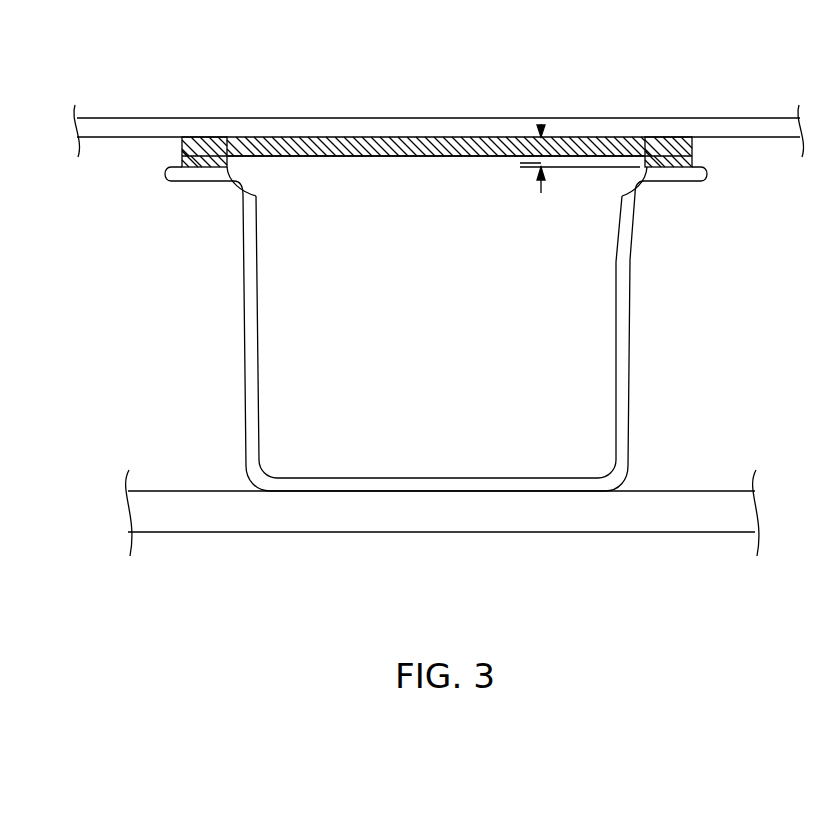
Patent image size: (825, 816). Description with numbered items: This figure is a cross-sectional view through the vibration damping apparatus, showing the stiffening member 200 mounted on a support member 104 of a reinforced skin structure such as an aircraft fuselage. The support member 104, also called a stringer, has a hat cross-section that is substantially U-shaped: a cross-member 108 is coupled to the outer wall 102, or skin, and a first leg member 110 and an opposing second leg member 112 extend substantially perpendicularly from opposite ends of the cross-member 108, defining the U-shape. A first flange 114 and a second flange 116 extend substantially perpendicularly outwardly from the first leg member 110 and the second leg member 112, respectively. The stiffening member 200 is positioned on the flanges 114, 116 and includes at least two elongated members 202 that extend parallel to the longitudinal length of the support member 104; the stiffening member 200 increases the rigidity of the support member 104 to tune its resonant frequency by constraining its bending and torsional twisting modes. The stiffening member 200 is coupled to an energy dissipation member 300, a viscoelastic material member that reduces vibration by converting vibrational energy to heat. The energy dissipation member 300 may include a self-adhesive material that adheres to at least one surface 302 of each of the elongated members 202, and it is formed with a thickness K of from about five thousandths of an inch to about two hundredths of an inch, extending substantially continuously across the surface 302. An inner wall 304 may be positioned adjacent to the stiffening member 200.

The stiffening member 200 is at (150, 97).
The elongated members 202 is at (212, 141).
The surface 302 is at (231, 165).
The inner wall 304 is at (627, 131).
The energy dissipation member 300 is at (438, 120).
The thickness K is at (520, 163).
The support member 104 is at (421, 375).
The first flange 114 is at (205, 182).
The second flange 116 is at (670, 182).
The first leg member 110 is at (244, 362).
The second leg member 112 is at (629, 335).
The cross-member 108 is at (433, 482).
The outer wall 102 is at (259, 516).